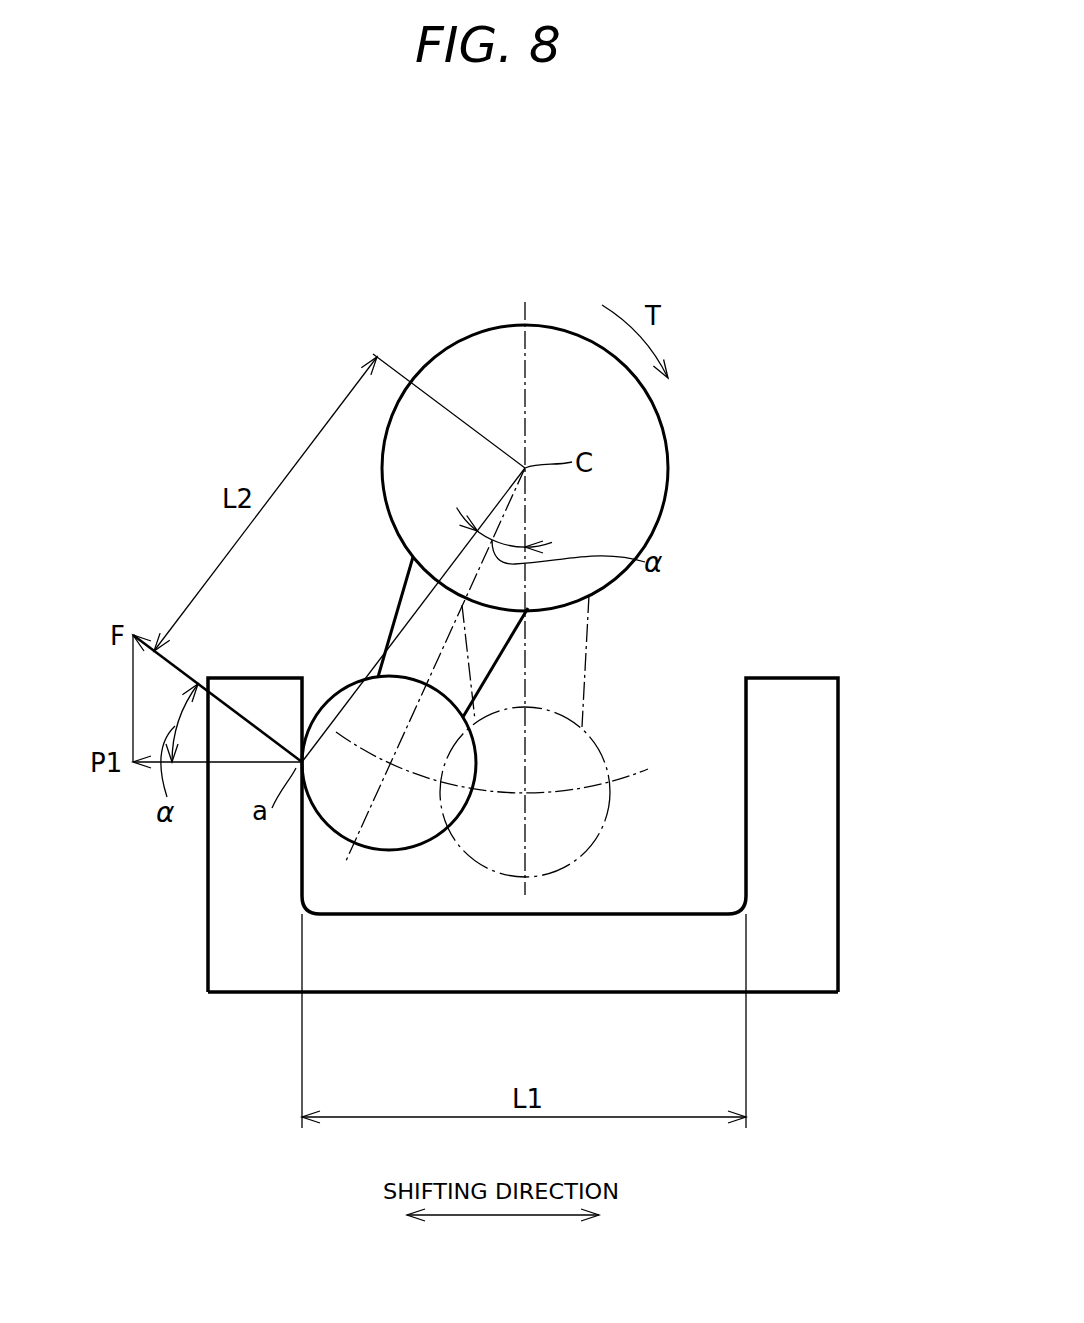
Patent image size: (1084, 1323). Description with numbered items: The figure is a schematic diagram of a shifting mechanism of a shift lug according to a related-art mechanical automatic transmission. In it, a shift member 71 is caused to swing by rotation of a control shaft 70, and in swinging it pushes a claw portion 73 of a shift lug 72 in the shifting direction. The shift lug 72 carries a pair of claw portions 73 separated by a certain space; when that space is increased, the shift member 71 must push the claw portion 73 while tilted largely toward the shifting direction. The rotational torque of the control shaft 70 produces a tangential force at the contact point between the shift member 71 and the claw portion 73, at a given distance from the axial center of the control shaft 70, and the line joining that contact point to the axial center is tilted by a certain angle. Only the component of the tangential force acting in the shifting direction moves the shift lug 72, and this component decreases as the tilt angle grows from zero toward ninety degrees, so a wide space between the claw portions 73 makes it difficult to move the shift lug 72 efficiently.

The control shaft 70 is at (485, 347).
The shift member 71 is at (397, 830).
The shift lug 72 is at (785, 998).
The claw portion 73 is at (225, 848).